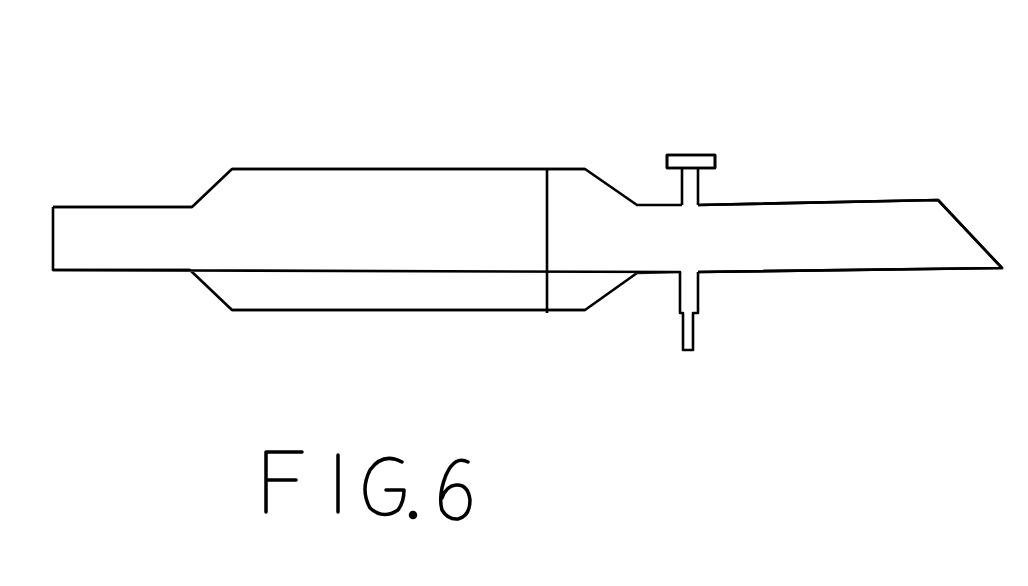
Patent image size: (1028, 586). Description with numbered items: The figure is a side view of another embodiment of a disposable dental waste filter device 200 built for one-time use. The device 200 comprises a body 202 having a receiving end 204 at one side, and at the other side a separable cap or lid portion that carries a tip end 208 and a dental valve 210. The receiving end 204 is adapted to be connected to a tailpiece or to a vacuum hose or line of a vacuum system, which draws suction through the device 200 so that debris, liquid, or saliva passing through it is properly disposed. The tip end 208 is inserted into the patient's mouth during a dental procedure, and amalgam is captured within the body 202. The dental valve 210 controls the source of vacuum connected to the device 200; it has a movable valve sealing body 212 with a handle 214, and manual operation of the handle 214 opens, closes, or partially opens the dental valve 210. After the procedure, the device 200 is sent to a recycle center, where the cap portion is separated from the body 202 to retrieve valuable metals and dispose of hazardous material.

The disposable dental waste filter device 200 is at (377, 121).
The body 202 is at (284, 225).
The receiving end 204 is at (102, 240).
The tip end 208 is at (848, 235).
The dental valve 210 is at (729, 174).
The movable valve sealing body 212 is at (699, 327).
The handle 214 is at (685, 155).